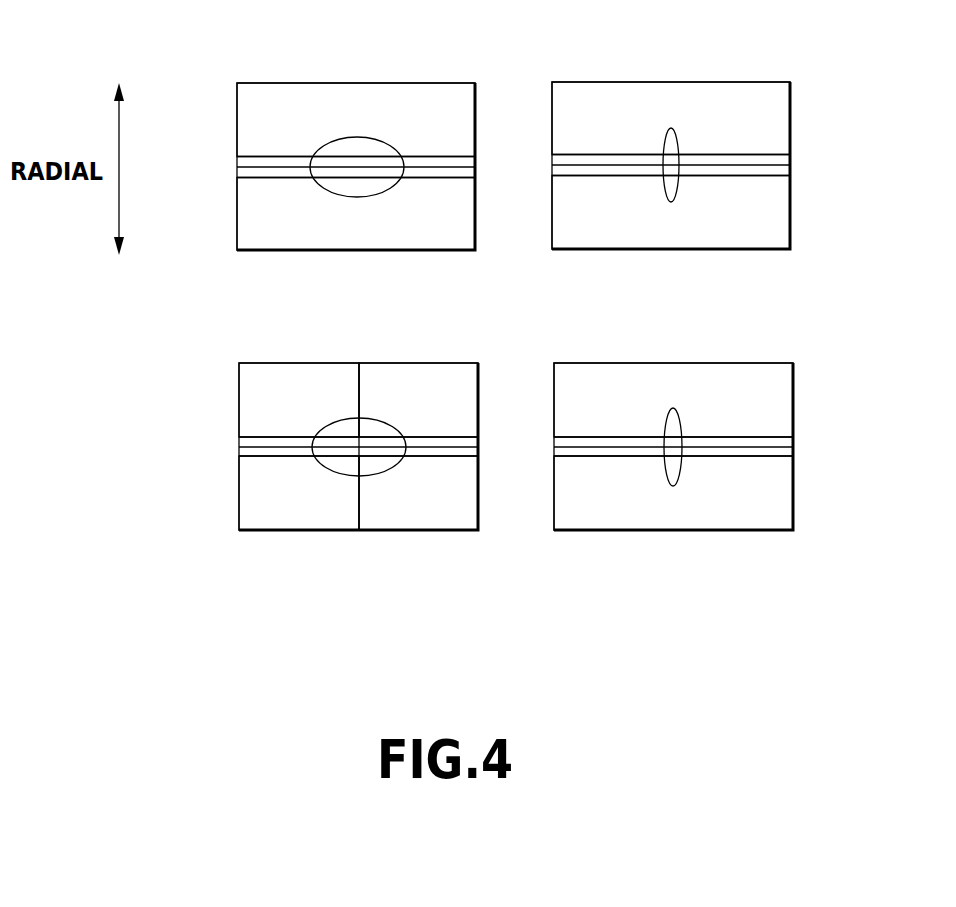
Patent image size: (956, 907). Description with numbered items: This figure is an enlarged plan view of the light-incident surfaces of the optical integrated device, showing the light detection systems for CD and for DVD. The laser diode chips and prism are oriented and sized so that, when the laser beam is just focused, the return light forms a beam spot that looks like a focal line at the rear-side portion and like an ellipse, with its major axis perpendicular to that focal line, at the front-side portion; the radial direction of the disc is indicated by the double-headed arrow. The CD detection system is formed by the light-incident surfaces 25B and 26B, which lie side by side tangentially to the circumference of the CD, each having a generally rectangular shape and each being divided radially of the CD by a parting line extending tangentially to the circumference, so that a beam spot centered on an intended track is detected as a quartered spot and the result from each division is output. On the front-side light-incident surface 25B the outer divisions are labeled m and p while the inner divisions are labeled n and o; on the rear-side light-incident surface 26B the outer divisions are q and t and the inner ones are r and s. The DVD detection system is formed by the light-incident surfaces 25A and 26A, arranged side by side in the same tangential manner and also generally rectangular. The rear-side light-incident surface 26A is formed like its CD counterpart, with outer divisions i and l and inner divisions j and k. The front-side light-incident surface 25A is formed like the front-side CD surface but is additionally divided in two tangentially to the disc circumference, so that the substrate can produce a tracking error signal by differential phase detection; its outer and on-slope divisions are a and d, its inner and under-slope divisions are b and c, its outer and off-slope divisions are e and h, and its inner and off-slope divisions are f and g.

The light-incident surface 25A is at (358, 483).
The light-incident surface 25B is at (323, 130).
The light-incident surface 26A is at (697, 481).
The light-incident surface 26B is at (702, 129).
The outer on-slope light-incident surface division a is at (299, 493).
The inner under-slope light-incident surface division b is at (240, 454).
The inner under-slope light-incident surface division c is at (240, 440).
The outer on-slope light-incident surface division d is at (299, 400).
The outer off-slope light-incident surface division e is at (418, 493).
The inner off-slope light-incident surface division f is at (478, 454).
The inner off-slope light-incident surface division g is at (478, 440).
The outer off-slope light-incident surface division h is at (418, 400).
The outer light-incident surface division i is at (673, 493).
The inner light-incident surface division j is at (793, 454).
The inner light-incident surface division k is at (793, 440).
The outer light-incident surface division l is at (673, 400).
The outer light-incident surface division m is at (356, 214).
The inner light-incident surface division n is at (238, 173).
The inner light-incident surface division o is at (238, 160).
The outer light-incident surface division p is at (356, 120).
The outer light-incident surface division q is at (671, 213).
The inner light-incident surface division r is at (790, 171).
The inner light-incident surface division s is at (790, 157).
The outer light-incident surface division t is at (671, 118).